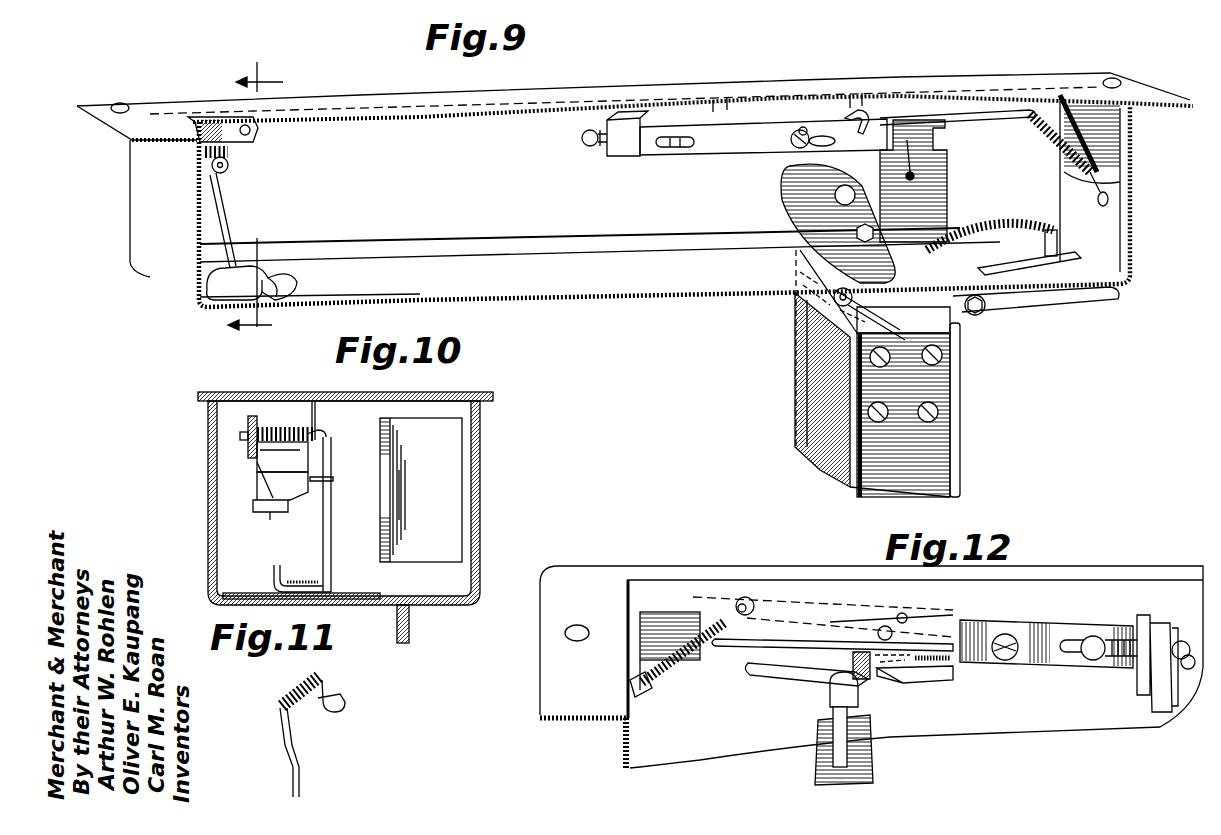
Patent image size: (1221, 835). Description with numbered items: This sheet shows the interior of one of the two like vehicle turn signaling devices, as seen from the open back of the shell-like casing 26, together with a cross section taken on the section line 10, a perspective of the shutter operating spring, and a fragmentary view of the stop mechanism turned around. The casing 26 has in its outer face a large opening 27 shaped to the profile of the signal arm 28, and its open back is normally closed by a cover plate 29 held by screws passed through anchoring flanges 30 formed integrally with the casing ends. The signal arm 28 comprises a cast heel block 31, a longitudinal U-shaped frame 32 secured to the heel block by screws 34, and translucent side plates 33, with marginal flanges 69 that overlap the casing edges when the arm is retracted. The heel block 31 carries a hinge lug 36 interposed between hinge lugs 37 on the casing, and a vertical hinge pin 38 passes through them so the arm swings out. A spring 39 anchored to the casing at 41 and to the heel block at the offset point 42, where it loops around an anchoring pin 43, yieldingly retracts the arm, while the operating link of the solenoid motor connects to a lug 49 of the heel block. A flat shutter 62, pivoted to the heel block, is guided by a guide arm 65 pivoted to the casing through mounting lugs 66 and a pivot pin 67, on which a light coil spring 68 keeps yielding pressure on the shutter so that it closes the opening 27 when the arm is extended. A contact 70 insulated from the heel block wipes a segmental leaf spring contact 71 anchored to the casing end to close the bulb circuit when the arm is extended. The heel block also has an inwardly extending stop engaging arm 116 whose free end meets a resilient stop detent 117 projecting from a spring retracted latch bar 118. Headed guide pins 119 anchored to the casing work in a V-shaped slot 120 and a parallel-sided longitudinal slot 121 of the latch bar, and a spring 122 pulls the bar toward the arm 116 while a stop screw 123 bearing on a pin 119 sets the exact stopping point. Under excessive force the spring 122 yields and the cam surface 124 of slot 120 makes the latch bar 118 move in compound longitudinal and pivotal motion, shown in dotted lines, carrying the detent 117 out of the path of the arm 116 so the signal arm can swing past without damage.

In FIG. 9, the section line 10— 10 is at (255, 195).
In FIG. 9, the casing 26 is at (197, 305).
In FIG. 10, the casing 26 is at (480, 480).
In FIG. 12, the casing 26 is at (775, 568).
In FIG. 9, the opening 27 is at (373, 307).
In FIG. 10, the opening 27 is at (393, 608).
In FIG. 9, the signal arm 28 is at (960, 458).
In FIG. 9, the cover plate 29 is at (606, 93).
In FIG. 10, the cover plate 29 is at (452, 397).
In FIG. 9, the anchoring flange 30 is at (110, 132).
In FIG. 9, the heel block 31 is at (950, 343).
In FIG. 9, the U-shaped frame 32 is at (905, 490).
In FIG. 9, the side plate 33 is at (820, 470).
In FIG. 9, the screws 34 is at (890, 362).
In FIG. 9, the hinge lug 36 is at (915, 318).
In FIG. 9, the hinge lugs 37 is at (960, 290).
In FIG. 9, the hinge pin 38 is at (990, 310).
In FIG. 9, the spring 39 is at (980, 228).
In FIG. 9, the spring anchor 41 is at (1052, 228).
In FIG. 9, the spring anchoring point 42 is at (796, 329).
In FIG. 9, the anchoring pin 43 is at (806, 349).
In FIG. 9, the lug 49 is at (820, 200).
In FIG. 9, the shutter 62 is at (613, 296).
In FIG. 10, the shutter 62 is at (336, 600).
In FIG. 9, the guide arm 65 is at (228, 212).
In FIG. 10, the guide arm 65 is at (332, 516).
In FIG. 9, the mounting lugs 66 is at (220, 117).
In FIG. 10, the mounting lugs 66 is at (320, 410).
In FIG. 9, the pivot pin 67 is at (230, 168).
In FIG. 9, the light coil spring 68 is at (233, 153).
In FIG. 10, the light coil spring 68 is at (270, 428).
In FIG. 11, the light coil spring 68 is at (278, 688).
In FIG. 9, the marginal flanges 69 is at (960, 377).
In FIG. 9, the contact 70 is at (870, 125).
In FIG. 12, the contact 70 is at (818, 682).
In FIG. 12, the leaf spring contact 71 is at (780, 675).
In FIG. 9, the stop engaging arm 116 is at (925, 165).
In FIG. 12, the stop engaging arm 116 is at (830, 660).
In FIG. 12, the stop detent 117 is at (895, 682).
In FIG. 9, the latch bar 118 is at (978, 110).
In FIG. 12, the latch bar 118 is at (935, 628).
In FIG. 9, the headed guide pins 119 is at (662, 140).
In FIG. 12, the headed guide pins 119 is at (1078, 623).
In FIG. 9, the V-shaped slot 120 is at (790, 150).
In FIG. 12, the V-shaped slot 120 is at (1000, 660).
In FIG. 9, the longitudinal slot 121 is at (690, 150).
In FIG. 12, the longitudinal slot 121 is at (1070, 655).
In FIG. 9, the spring 122 is at (1048, 150).
In FIG. 12, the spring 122 is at (700, 625).
In FIG. 9, the stop screw 123 is at (602, 152).
In FIG. 12, the stop screw 123 is at (1110, 660).
In FIG. 9, the cam surface 124 is at (812, 127).
In FIG. 12, the cam surface 124 is at (985, 645).